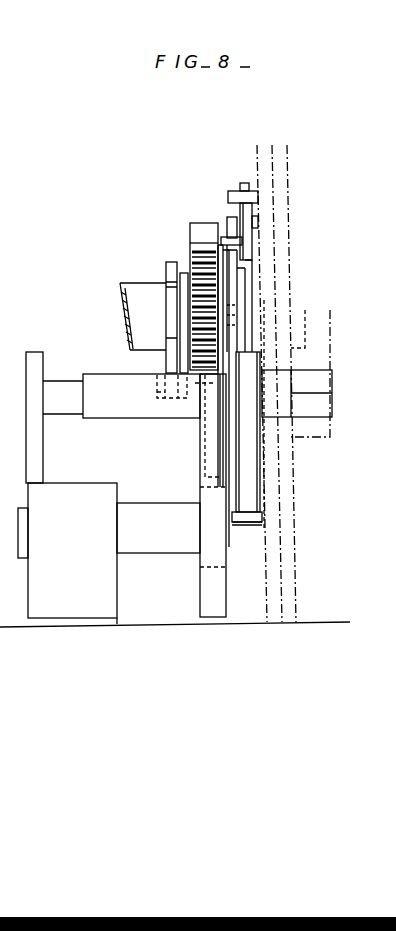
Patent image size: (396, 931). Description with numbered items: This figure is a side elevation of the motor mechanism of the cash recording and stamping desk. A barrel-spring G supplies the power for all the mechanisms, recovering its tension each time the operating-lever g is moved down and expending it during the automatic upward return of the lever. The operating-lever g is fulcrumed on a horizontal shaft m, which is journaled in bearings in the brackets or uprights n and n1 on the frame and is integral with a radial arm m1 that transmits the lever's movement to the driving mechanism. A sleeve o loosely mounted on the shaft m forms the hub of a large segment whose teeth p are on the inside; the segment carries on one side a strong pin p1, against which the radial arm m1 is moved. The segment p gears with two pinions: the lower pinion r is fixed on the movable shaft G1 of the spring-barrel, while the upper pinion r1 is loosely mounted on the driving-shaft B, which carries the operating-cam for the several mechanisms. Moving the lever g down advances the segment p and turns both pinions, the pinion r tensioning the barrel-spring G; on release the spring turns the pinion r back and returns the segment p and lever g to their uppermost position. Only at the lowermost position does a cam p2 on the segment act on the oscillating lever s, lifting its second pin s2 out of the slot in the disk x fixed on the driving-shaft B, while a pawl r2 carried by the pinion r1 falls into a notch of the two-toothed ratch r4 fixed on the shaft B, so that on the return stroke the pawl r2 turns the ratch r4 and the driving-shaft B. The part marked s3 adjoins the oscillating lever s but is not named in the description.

The bracket n is at (273, 301).
The operating-lever g is at (310, 373).
The bracket n1 is at (35, 417).
The barrel-spring G is at (67, 553).
The movable shaft of the spring-barrel G1 is at (158, 528).
The sleeve o is at (130, 396).
The lower pinion r is at (210, 495).
The upper pinion r1 is at (203, 384).
The pawl r2 is at (170, 365).
The two-toothed ratch r4 is at (172, 262).
The driving-shaft B is at (143, 316).
The toothed segment p is at (203, 231).
The pin p1 is at (253, 527).
The cam p2 is at (229, 548).
The oscillating lever s is at (253, 208).
The second pin s2 is at (240, 243).
The screw head s3 is at (242, 189).
The disk x is at (236, 310).
The horizontal shaft m is at (297, 393).
The radial arm m1 is at (248, 415).